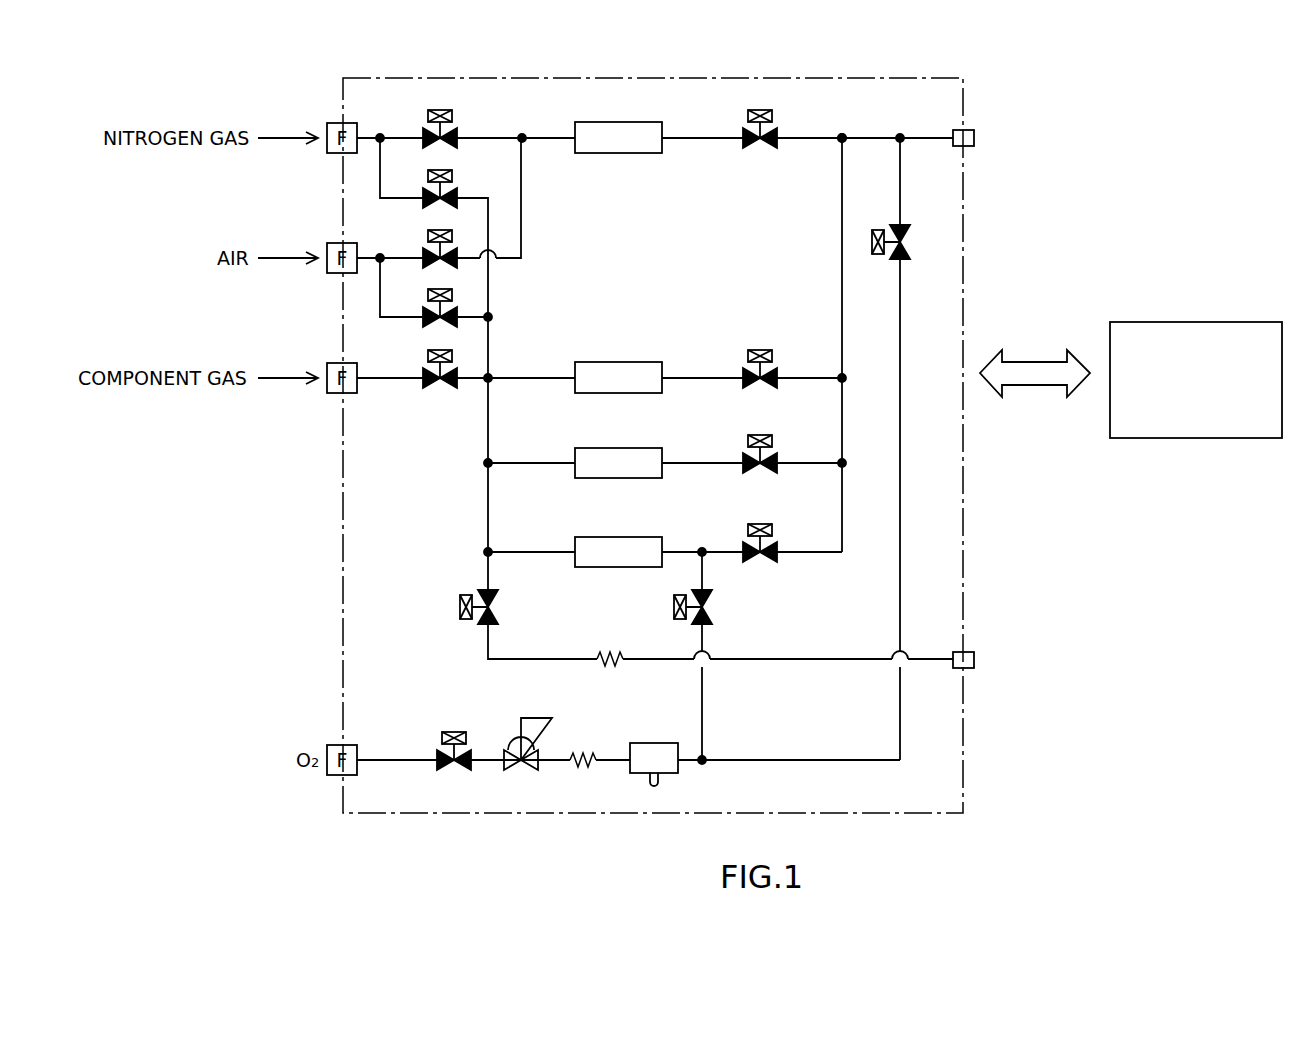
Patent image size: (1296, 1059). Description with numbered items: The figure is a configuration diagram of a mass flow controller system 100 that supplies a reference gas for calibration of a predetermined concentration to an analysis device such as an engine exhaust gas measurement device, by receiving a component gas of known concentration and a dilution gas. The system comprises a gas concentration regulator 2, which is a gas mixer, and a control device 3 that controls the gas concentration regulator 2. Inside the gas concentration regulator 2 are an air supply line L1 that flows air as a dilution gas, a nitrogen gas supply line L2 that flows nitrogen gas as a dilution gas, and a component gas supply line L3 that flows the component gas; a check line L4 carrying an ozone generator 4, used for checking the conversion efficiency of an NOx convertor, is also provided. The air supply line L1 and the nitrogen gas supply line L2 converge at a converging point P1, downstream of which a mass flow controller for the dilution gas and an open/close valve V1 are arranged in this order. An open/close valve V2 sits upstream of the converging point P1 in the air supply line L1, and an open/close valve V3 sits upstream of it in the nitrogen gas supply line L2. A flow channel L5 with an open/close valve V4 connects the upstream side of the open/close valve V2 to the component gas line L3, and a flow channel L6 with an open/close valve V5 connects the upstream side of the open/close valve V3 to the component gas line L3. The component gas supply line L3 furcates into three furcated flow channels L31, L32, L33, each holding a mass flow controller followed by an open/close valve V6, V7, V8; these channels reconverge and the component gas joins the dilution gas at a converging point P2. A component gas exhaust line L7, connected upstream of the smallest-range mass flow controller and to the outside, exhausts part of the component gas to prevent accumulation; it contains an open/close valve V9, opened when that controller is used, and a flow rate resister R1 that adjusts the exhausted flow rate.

The gas concentration regulator 2 is at (678, 78).
The control device 3 is at (1196, 322).
The ozone generator 4 is at (654, 743).
The mass flow controller system 100 is at (1162, 144).
The air supply line L1 is at (545, 208).
The nitrogen gas supply line L2 is at (495, 101).
The component gas supply line L3 is at (454, 496).
The furcated flow channel L31 is at (712, 376).
The furcated flow channel L32 is at (712, 461).
The furcated flow channel L33 is at (722, 550).
The check line L4 is at (592, 798).
The flow channel L5 is at (359, 297).
The flow channel L6 is at (359, 178).
The component gas exhaust line L7 is at (469, 653).
The converging point P1 is at (522, 134).
The converging point P2 is at (842, 134).
The flow rate resister R1 is at (600, 656).
The open/close valve V1 is at (763, 148).
The open/close valve V2 is at (448, 263).
The open/close valve V3 is at (428, 128).
The open/close valve V4 is at (432, 320).
The open/close valve V5 is at (432, 201).
The open/close valve V6 is at (772, 372).
The open/close valve V7 is at (772, 457).
The open/close valve V8 is at (772, 546).
The open/close valve V9 is at (460, 607).